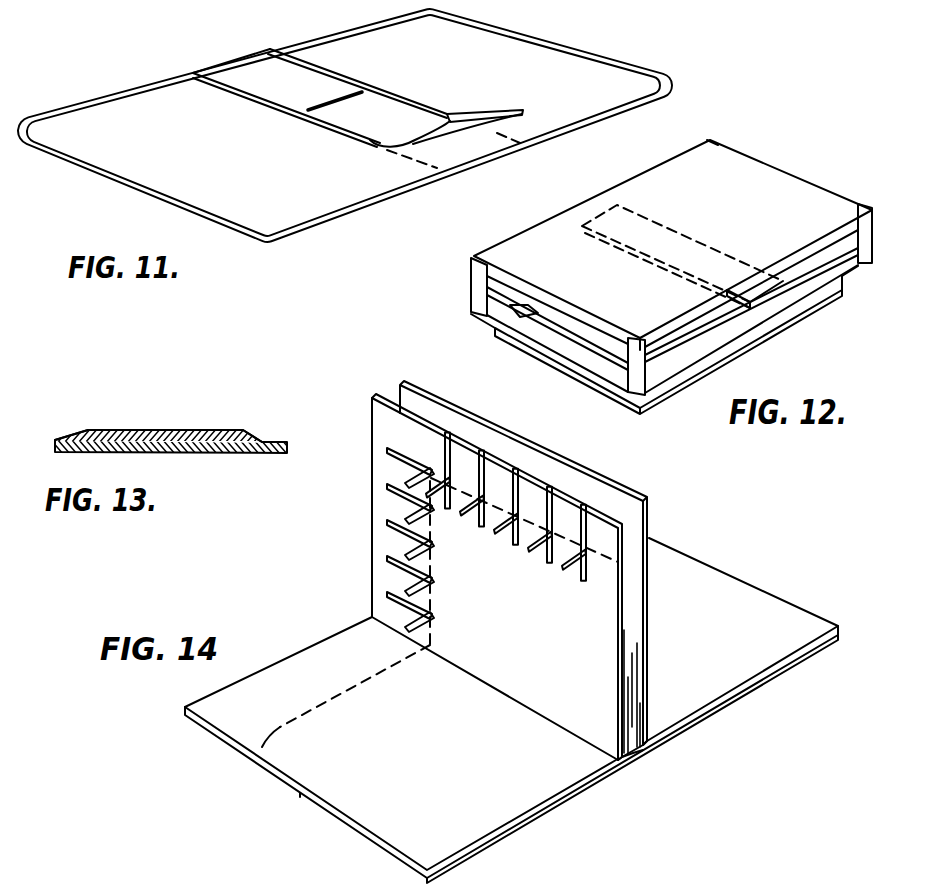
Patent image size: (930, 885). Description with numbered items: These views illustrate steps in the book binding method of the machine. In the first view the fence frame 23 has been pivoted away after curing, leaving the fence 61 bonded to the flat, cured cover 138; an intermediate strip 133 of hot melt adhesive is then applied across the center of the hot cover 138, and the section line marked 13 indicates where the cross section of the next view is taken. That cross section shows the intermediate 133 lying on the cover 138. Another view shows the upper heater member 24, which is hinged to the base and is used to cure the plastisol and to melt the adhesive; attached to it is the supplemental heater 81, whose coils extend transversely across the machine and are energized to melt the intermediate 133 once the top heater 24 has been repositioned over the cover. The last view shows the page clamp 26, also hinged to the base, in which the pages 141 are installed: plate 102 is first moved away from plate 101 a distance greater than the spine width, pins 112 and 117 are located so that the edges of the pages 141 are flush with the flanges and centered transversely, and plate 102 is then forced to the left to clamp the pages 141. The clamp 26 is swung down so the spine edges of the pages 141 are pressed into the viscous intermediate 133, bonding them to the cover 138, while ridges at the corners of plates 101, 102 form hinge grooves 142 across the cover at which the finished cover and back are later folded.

In FIG. 11, the fence 61 is at (543, 39).
In FIG. 11, the cover 138 is at (157, 105).
In FIG. 13, the cover 138 is at (279, 445).
In FIG. 14, the cover 138 is at (507, 835).
In FIG. 11, the intermediate strip 133 is at (458, 133).
In FIG. 13, the intermediate strip 133 is at (195, 437).
In FIG. 14, the intermediate strip 133 is at (636, 757).
In FIG. 11, the section line 13- 13 is at (279, 118).
In FIG. 12, the upper heater member 24 is at (769, 186).
In FIG. 12, the supplemental heater 81 is at (647, 240).
In FIG. 12, the frame 23 is at (800, 299).
In FIG. 14, the page clamp 26 is at (440, 386).
In FIG. 14, the plate 102 is at (598, 470).
In FIG. 14, the pins 117 is at (402, 522).
In FIG. 14, the pins 112 is at (503, 530).
In FIG. 14, the plate 101 is at (322, 622).
In FIG. 14, the pages 141 is at (636, 628).
In FIG. 14, the hinge grooves 142 is at (645, 762).